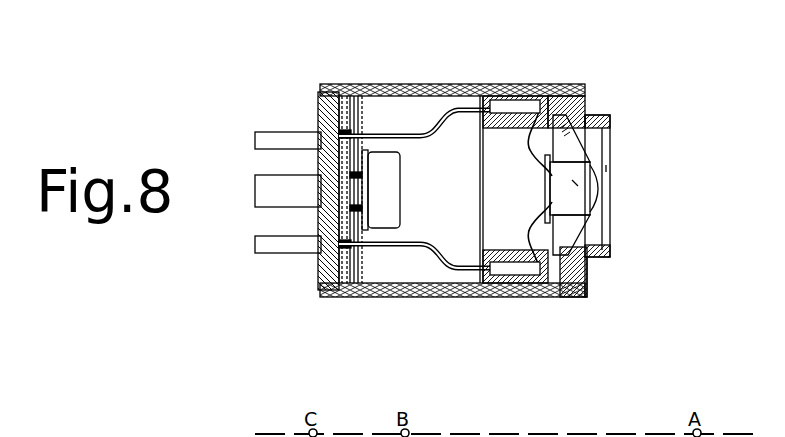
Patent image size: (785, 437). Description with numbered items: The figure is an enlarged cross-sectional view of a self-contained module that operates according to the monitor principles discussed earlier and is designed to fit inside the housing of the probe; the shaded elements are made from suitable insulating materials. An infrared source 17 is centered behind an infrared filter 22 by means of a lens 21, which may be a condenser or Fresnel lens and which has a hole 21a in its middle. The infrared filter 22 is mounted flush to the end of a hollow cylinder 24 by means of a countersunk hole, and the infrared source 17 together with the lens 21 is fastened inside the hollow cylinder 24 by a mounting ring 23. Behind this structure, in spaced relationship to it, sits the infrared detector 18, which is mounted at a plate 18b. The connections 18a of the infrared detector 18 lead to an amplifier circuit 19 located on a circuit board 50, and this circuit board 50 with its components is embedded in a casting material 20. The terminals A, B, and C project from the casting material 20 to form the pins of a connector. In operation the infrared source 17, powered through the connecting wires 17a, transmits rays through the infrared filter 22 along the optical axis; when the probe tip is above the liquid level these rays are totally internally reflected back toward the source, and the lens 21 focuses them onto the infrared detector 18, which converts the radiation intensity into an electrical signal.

The infrared source 17 is at (578, 196).
The connecting wires 17a is at (515, 108).
The infrared detector 18 is at (387, 230).
The connections 18a is at (321, 138).
The plate 18b is at (383, 100).
The amplifier circuit 19 is at (360, 100).
The casting material 20 is at (318, 286).
The lens 21 is at (592, 116).
The hole 21a is at (565, 216).
The infrared filter 22 is at (612, 156).
The mounting ring 23 is at (483, 118).
The hollow cylinder 24 is at (587, 296).
The circuit board 50 is at (331, 80).
The terminal A is at (256, 194).
The terminal B is at (256, 140).
The terminal C is at (256, 245).